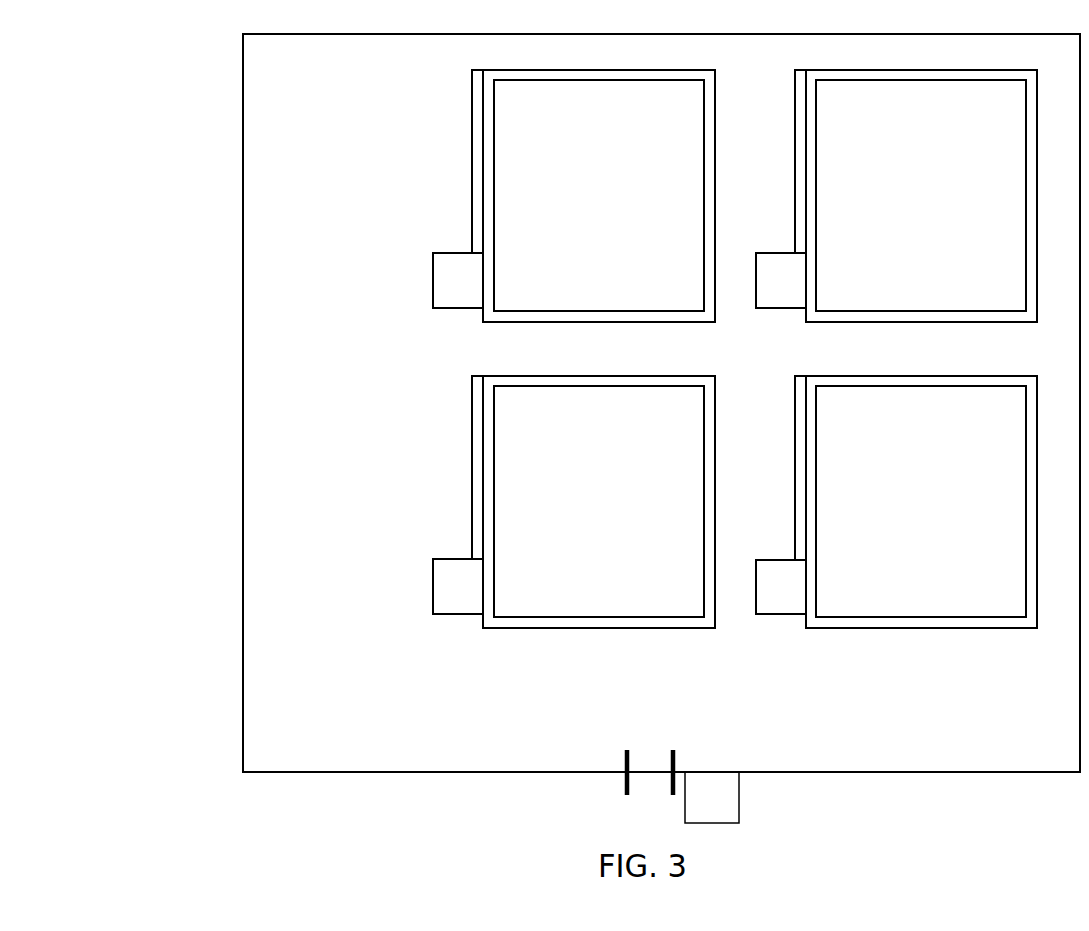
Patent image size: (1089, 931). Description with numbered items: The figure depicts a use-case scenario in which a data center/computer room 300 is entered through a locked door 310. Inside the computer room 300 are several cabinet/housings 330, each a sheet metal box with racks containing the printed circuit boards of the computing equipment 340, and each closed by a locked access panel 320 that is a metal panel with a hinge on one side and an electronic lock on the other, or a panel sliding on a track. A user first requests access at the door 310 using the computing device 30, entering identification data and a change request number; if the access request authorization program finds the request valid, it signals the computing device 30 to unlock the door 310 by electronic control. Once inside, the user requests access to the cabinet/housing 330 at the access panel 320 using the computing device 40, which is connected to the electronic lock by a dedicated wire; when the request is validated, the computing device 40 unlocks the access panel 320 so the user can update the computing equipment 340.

The data center/computer room 300 is at (243, 415).
The access panel 320 is at (472, 465).
The computing device 40 is at (433, 585).
The cabinet/housing 330 is at (565, 628).
The computing equipment 340 is at (648, 617).
The locked door 310 is at (649, 772).
The computing device 30 is at (739, 796).